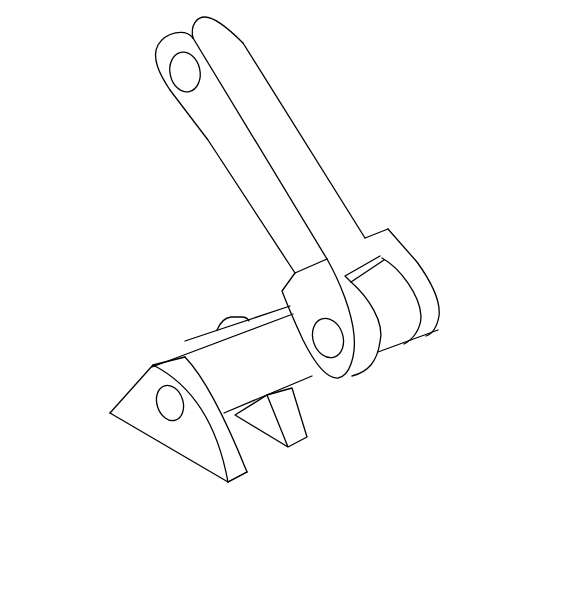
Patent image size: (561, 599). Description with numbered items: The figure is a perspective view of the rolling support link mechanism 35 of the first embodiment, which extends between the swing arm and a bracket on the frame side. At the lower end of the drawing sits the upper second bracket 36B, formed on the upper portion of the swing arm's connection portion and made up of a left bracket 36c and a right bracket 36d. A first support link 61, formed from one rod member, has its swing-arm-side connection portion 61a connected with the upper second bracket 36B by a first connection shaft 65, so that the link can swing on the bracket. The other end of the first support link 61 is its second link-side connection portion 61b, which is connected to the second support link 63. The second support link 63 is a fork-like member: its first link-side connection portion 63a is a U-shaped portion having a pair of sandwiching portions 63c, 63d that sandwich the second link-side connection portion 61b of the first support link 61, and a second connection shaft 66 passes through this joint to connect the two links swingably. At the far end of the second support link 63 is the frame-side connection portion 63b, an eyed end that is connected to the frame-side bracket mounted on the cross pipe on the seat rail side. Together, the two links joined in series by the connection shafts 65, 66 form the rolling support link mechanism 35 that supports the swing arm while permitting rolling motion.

The rolling support link mechanism 35 is at (353, 149).
The second support link 63 is at (306, 130).
The first link-side connection portion 63a is at (423, 246).
The frame-side connection portion 63b is at (189, 34).
The sandwiching portion 63c is at (372, 366).
The sandwiching portion 63d is at (438, 309).
The second connection shaft 66 is at (329, 338).
The first support link 61 is at (305, 378).
The swing-arm-side connection portion 61a is at (197, 345).
The second link-side connection portion 61b is at (397, 336).
The first connection shaft 65 is at (157, 405).
The upper second bracket 36B is at (155, 454).
The left bracket 36c is at (247, 472).
The right bracket 36d is at (306, 438).